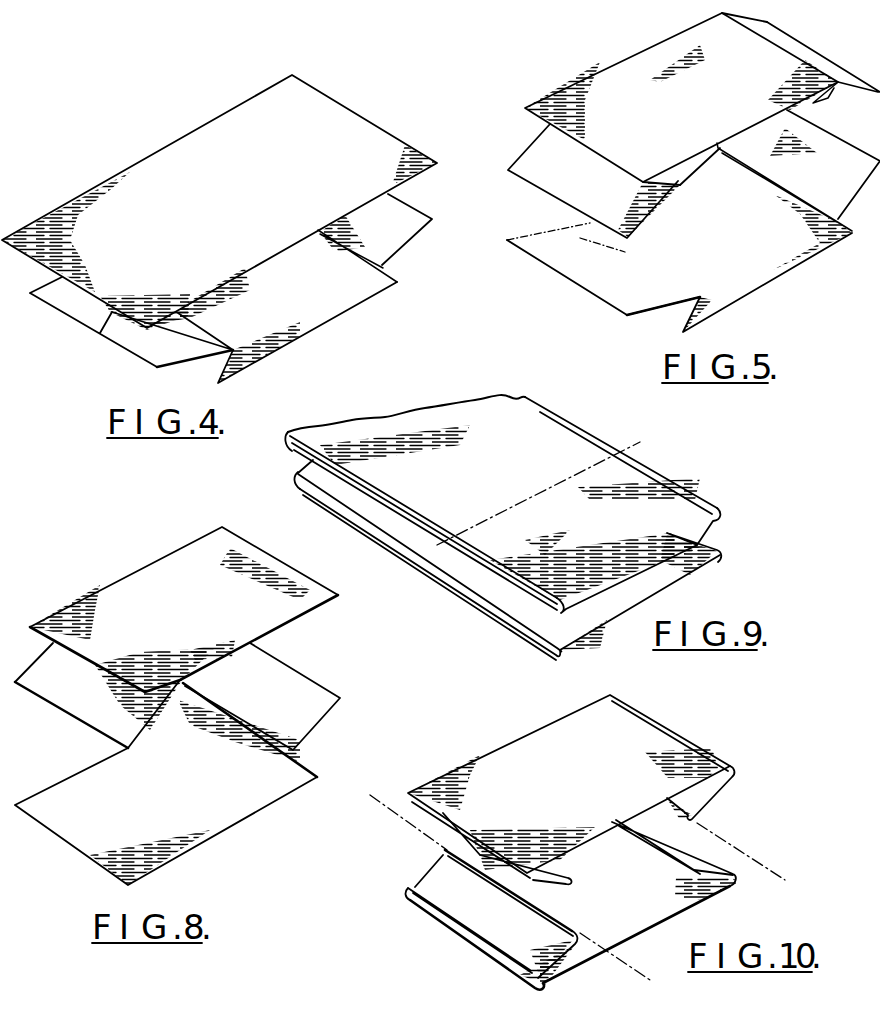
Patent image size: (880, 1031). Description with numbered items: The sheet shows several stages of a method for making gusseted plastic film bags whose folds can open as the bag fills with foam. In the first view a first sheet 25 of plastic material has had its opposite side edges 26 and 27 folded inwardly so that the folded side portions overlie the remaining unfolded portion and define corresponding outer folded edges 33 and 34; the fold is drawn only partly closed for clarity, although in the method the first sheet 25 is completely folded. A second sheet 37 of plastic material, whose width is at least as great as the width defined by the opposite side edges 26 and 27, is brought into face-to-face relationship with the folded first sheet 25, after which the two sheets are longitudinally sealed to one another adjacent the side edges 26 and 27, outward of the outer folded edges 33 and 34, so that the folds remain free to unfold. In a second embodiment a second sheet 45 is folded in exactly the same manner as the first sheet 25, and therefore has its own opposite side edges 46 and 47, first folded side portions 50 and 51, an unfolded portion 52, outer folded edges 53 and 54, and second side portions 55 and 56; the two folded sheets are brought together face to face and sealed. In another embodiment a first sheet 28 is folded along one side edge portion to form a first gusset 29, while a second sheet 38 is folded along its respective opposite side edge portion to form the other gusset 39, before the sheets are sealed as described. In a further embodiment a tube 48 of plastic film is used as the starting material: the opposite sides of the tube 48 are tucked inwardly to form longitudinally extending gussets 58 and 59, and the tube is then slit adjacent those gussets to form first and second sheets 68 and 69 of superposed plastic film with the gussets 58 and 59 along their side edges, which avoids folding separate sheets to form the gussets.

In FIG. 4, the first sheet 25 is at (345, 327).
In FIG. 5, the first sheet 25 is at (788, 295).
In FIG. 4, the opposite side edge 26 is at (413, 205).
In FIG. 4, the opposite side edge 27 is at (97, 333).
In FIG. 8, the first sheet 28 is at (172, 809).
In FIG. 8, the first gusset 29 is at (320, 777).
In FIG. 4, the outer folded edge 33 is at (397, 282).
In FIG. 4, the outer folded edge 34 is at (200, 375).
In FIG. 4, the second sheet 37 is at (148, 137).
In FIG. 8, the second sheet 38 is at (198, 615).
In FIG. 8, the gusset 39 is at (13, 682).
In FIG. 5, the second sheet 45 is at (589, 61).
In FIG. 5, the opposite side edge 46 is at (818, 50).
In FIG. 5, the opposite side edge 47 is at (558, 205).
In FIG. 9, the tube 48 is at (735, 482).
In FIG. 5, the first folded side portion 50 is at (663, 176).
In FIG. 5, the first folded side portion 51 is at (813, 103).
In FIG. 5, the unfolded portion 52 is at (684, 123).
In FIG. 5, the outer folded edge 53 is at (735, 18).
In FIG. 5, the outer folded edge 54 is at (525, 108).
In FIG. 5, the second side portion 55 is at (588, 185).
In FIG. 5, the second side portion 56 is at (840, 85).
In FIG. 9, the longitudinally extending gusset 58 is at (708, 543).
In FIG. 9, the longitudinally extending gusset 59 is at (553, 620).
In FIG. 10, the first sheet 68 is at (583, 784).
In FIG. 10, the second sheet 69 is at (623, 890).